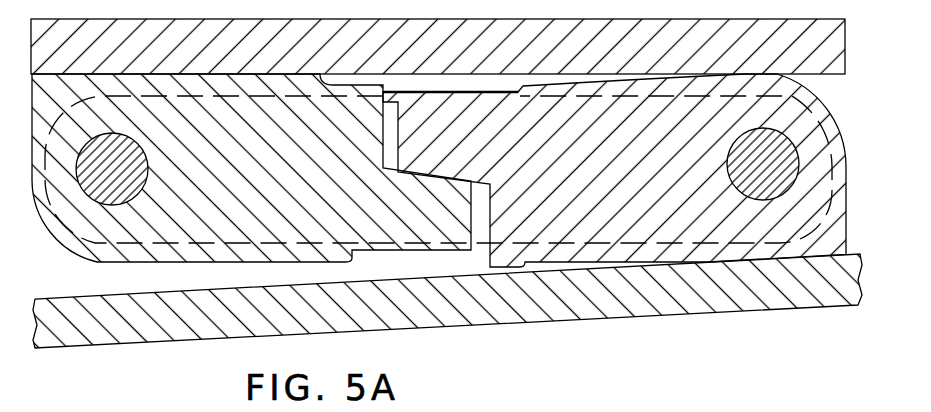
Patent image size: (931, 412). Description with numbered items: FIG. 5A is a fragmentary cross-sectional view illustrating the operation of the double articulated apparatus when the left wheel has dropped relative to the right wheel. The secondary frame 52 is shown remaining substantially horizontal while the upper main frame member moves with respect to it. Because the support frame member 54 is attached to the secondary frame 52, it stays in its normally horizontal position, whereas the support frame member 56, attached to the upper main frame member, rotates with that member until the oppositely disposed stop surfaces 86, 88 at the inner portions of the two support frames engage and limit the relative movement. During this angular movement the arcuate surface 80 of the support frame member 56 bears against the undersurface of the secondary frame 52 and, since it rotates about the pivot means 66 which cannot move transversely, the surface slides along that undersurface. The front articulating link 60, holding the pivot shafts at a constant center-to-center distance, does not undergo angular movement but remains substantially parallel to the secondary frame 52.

The secondary frame 52 is at (833, 76).
The support frame member 54 is at (105, 269).
The support frame member 56 is at (847, 213).
The front articulating link 60 is at (487, 246).
The pivot means 66 is at (810, 163).
The arcuate surface 80 is at (836, 118).
The stop surface 86 is at (442, 182).
The stop surface 88 is at (446, 173).